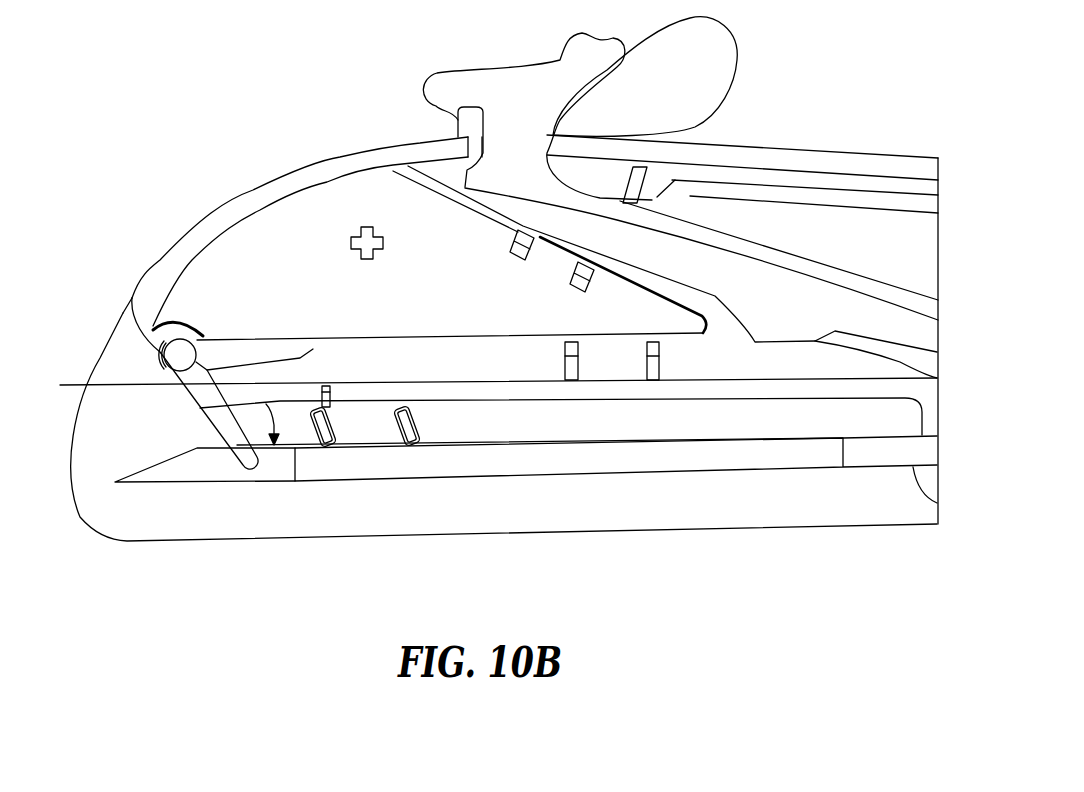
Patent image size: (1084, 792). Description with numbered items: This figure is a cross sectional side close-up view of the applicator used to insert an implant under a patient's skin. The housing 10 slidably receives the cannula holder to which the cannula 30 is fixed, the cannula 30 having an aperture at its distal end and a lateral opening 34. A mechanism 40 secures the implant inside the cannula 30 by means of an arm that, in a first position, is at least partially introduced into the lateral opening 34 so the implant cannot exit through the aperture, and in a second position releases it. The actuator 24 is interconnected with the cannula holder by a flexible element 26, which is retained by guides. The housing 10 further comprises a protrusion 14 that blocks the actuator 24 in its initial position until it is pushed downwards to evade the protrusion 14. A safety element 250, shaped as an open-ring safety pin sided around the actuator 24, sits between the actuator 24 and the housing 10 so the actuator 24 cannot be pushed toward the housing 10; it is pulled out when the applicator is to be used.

The housing 10 is at (442, 143).
The protrusion 14 is at (648, 201).
The actuator 24 is at (507, 94).
The flexible element 26 is at (757, 254).
The cannula 30 is at (213, 472).
The lateral opening 34 is at (486, 394).
The mechanism 40 is at (200, 408).
The safety element 250 is at (692, 76).